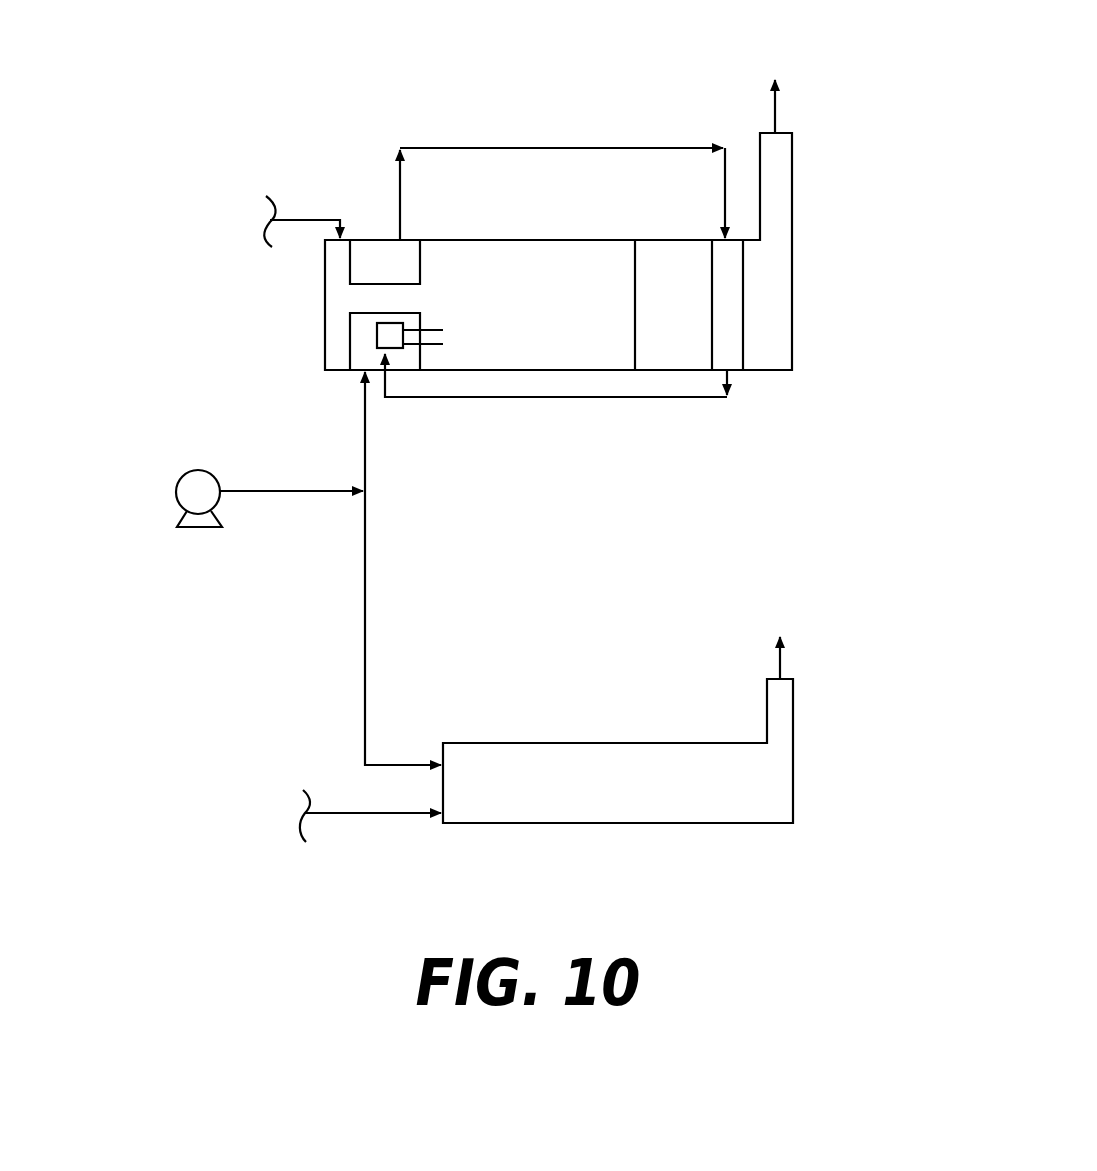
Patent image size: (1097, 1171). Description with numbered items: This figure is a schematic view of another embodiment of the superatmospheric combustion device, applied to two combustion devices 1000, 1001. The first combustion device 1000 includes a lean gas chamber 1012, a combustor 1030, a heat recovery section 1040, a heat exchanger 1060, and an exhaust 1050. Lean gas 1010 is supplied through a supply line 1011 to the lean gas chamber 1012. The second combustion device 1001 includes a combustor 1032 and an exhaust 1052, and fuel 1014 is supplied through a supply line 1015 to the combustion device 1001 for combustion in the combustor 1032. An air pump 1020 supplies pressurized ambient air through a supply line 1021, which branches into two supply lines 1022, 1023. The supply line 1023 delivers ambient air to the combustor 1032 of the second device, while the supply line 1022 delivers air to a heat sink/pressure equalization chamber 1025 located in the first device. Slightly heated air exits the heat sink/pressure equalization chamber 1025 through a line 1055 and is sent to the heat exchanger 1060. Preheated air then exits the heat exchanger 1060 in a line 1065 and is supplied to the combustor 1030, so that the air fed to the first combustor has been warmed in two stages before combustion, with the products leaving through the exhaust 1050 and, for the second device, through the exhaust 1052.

The combustion device 1000 is at (462, 240).
The combustion device 1001 is at (603, 741).
The lean gas 1010 is at (230, 222).
The supply line 1011 is at (290, 220).
The lean gas chamber 1012 is at (330, 316).
The fuel 1014 is at (264, 816).
The supply line 1015 is at (325, 815).
The air pump 1020 is at (178, 490).
The supply line 1021 is at (250, 491).
The supply line 1022 is at (365, 472).
The supply line 1023 is at (365, 575).
The heat sink/pressure equalization chamber 1025 is at (374, 258).
The combustor 1030 is at (496, 323).
The combustor 1032 is at (576, 802).
The heat recovery section 1040 is at (642, 323).
The exhaust 1050 is at (777, 72).
The exhaust 1052 is at (777, 620).
The line 1055 is at (468, 148).
The heat exchanger 1060 is at (727, 287).
The line 1065 is at (535, 397).